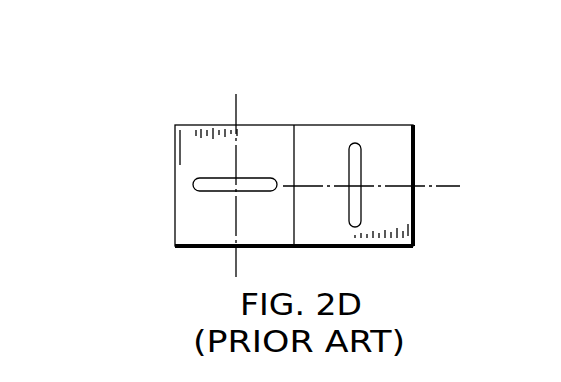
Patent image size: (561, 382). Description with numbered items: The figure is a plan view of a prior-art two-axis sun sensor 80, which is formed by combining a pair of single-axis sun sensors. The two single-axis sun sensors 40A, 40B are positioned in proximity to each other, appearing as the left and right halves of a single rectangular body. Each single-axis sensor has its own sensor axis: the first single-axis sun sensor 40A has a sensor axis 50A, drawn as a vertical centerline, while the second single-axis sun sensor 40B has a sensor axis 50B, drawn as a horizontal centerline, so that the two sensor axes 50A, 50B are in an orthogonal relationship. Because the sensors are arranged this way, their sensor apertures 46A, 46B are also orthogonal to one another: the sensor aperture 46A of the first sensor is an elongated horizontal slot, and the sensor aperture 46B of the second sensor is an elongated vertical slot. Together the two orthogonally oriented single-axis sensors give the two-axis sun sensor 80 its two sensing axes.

The two-axis sun sensor 80 is at (176, 125).
The single-axis sun sensor 40A is at (175, 162).
The single-axis sun sensor 40B is at (414, 160).
The sensor aperture 46A is at (218, 191).
The sensor aperture 46B is at (361, 158).
The sensor axis 50A is at (237, 107).
The sensor axis 50B is at (443, 187).